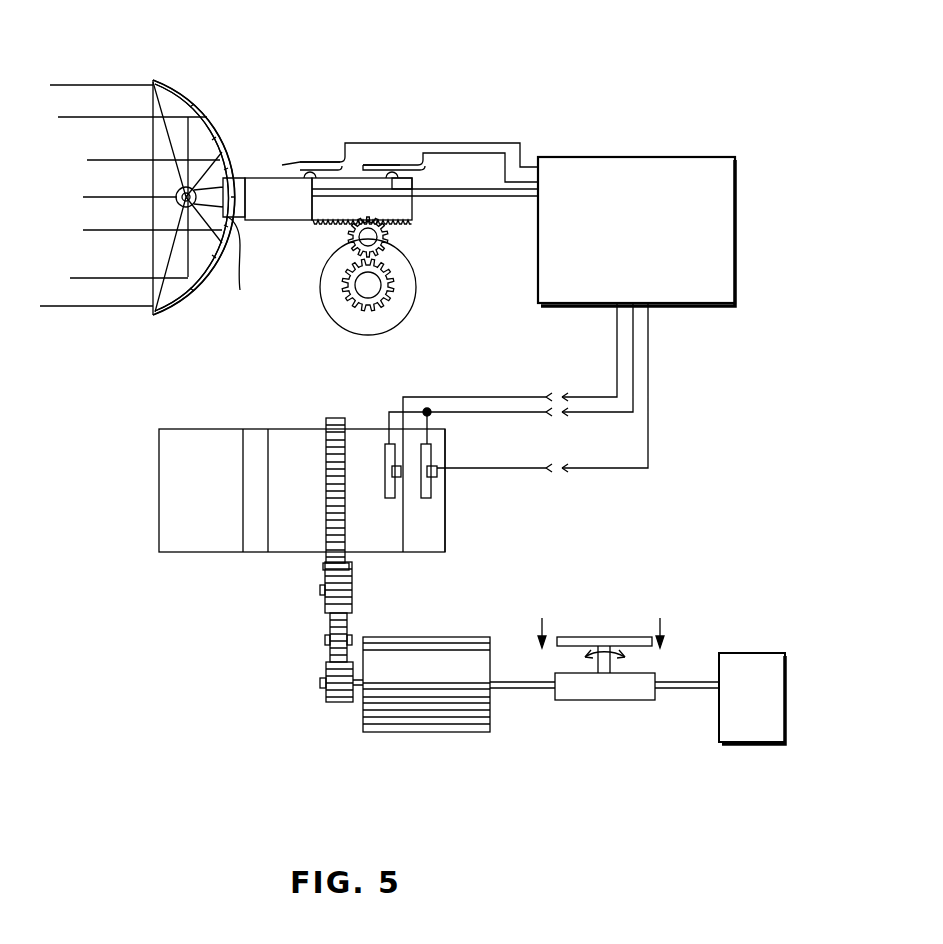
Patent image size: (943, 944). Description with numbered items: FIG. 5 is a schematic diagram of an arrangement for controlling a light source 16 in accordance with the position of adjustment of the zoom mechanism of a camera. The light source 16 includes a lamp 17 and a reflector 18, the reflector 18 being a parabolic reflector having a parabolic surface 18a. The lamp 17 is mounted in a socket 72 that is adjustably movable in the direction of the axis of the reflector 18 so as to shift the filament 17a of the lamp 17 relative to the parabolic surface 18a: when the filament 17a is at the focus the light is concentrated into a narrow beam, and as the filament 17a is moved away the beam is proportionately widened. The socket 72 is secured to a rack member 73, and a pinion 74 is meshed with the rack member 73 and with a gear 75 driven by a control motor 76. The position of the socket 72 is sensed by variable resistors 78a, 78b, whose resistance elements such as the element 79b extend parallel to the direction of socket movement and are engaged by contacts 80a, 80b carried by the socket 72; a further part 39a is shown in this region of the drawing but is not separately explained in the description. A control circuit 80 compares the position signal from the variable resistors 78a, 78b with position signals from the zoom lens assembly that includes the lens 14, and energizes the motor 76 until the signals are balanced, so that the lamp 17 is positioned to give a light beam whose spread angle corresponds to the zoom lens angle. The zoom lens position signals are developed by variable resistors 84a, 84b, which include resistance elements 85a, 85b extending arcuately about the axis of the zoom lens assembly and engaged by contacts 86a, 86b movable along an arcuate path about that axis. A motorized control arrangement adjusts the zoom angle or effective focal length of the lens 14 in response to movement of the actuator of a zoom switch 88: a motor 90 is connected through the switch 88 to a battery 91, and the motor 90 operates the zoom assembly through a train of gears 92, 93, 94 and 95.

The lens 14 is at (204, 428).
The light source 16 is at (215, 278).
The lamp 17 is at (208, 206).
The filament 17a is at (178, 198).
The reflector 18 is at (185, 98).
The parabolic surface 18a is at (198, 137).
The contact strip 39a is at (323, 158).
The socket 72 is at (242, 267).
The rack member 73 is at (313, 222).
The pinion 74 is at (388, 236).
The gear 75 is at (390, 273).
The control motor 76 is at (392, 303).
The variable resistor 78a is at (325, 137).
The contact arm 78b is at (418, 128).
The resistance element 79b is at (400, 163).
The control circuit 80 is at (625, 168).
The contact 80a is at (305, 172).
The contact 80b is at (417, 177).
The variable resistor 84a is at (371, 420).
The variable resistor 84b is at (442, 438).
The resistance element 85a is at (392, 499).
The resistance element 85b is at (428, 499).
The switch actuator 86a is at (400, 477).
The switch actuator 86b is at (437, 472).
The zoom switch 88 is at (625, 630).
The motor 90 is at (456, 732).
The battery 91 is at (773, 690).
The gear 92 is at (326, 698).
The gear 93 is at (330, 630).
The gear 94 is at (325, 572).
The gear 95 is at (326, 420).